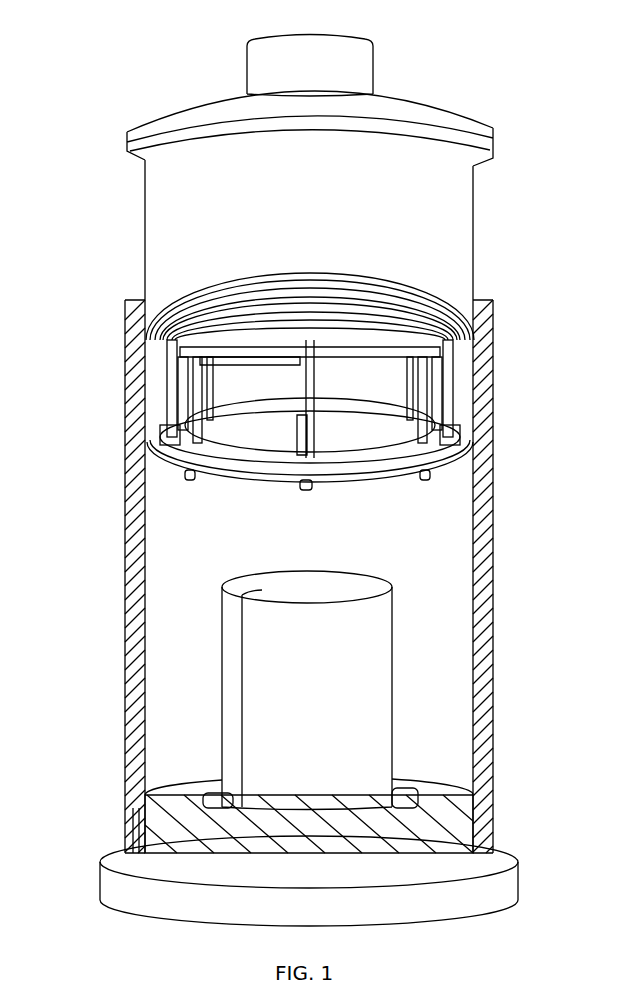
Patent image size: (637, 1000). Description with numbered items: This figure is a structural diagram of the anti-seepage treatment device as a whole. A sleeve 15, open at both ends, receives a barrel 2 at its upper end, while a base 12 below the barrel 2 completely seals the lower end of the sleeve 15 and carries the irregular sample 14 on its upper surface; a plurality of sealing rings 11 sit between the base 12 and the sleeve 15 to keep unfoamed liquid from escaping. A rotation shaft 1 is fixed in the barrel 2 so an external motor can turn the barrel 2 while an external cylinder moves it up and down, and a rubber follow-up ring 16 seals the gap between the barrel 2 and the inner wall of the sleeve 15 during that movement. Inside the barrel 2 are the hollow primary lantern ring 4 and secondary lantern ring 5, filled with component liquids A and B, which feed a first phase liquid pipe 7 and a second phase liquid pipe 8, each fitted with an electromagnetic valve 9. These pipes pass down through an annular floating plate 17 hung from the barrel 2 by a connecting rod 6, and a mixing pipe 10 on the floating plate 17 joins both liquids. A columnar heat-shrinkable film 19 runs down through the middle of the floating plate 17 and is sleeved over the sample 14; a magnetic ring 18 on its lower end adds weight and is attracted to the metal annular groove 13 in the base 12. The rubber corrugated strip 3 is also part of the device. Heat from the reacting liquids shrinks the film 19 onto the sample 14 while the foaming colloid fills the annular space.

The rotation shaft 1 is at (360, 88).
The barrel 2 is at (390, 197).
The rubber corrugated strip 3 is at (390, 280).
The primary lantern ring 4 is at (395, 325).
The secondary lantern ring 5 is at (445, 342).
The connecting rod 6 is at (447, 370).
The first phase liquid pipe 7 is at (435, 388).
The second phase liquid pipe 8 is at (440, 425).
The electromagnetic valve 9 is at (437, 437).
The mixing pipe 10 is at (435, 445).
The sealing ring 11 is at (135, 835).
The base 12 is at (205, 800).
The annular groove 13 is at (176, 788).
The sample 14 is at (262, 769).
The sleeve 15 is at (140, 497).
The follow-up ring 16 is at (165, 435).
The floating plate 17 is at (160, 357).
The magnetic ring 18 is at (180, 345).
The heat-shrinkable film 19 is at (233, 377).